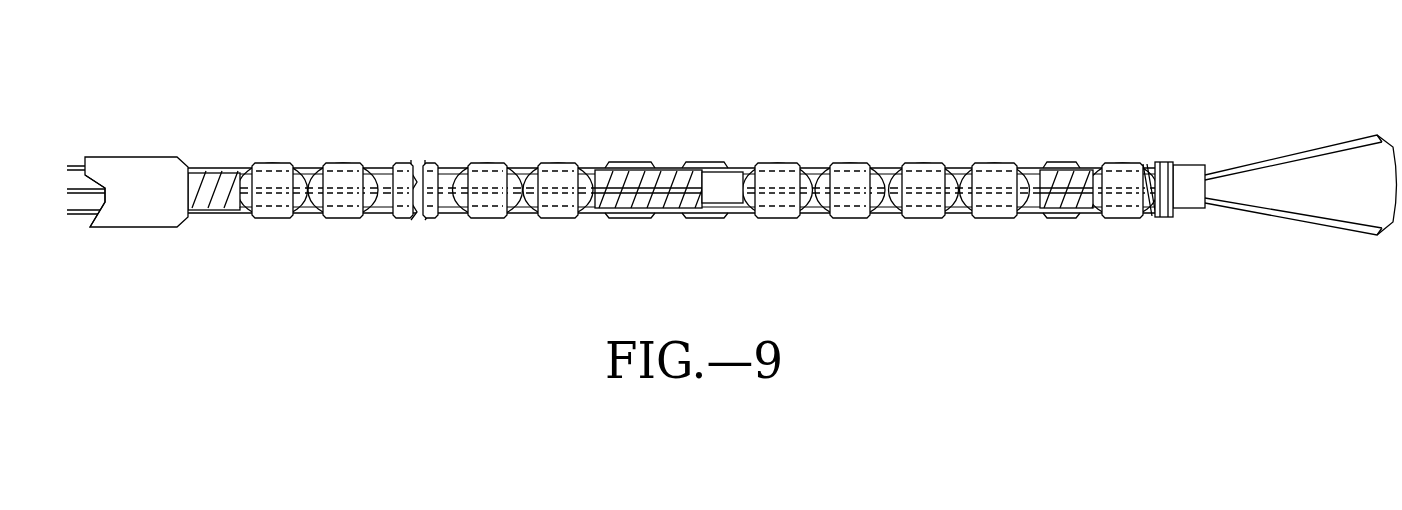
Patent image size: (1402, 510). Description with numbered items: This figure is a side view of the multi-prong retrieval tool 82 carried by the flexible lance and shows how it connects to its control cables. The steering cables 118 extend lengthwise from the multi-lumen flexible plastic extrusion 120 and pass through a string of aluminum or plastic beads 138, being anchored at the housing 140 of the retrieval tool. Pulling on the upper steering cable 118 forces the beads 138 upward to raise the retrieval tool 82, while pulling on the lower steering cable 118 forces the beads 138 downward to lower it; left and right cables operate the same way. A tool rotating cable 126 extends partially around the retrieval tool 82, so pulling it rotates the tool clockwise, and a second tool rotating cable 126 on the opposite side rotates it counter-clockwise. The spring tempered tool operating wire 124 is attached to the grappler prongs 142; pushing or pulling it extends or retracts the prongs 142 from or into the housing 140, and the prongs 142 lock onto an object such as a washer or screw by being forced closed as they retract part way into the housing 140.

The multi-prong retrieval tool 82 is at (1222, 103).
The steering cables 118 is at (73, 167).
The multi-lumen flexible plastic extrusion 120 is at (128, 168).
The tool operating wire 124 is at (102, 202).
The tool rotating cables 126 is at (1158, 162).
The beads 138 is at (275, 162).
The housing 140 is at (1132, 219).
The grappler prongs 142 is at (1263, 213).